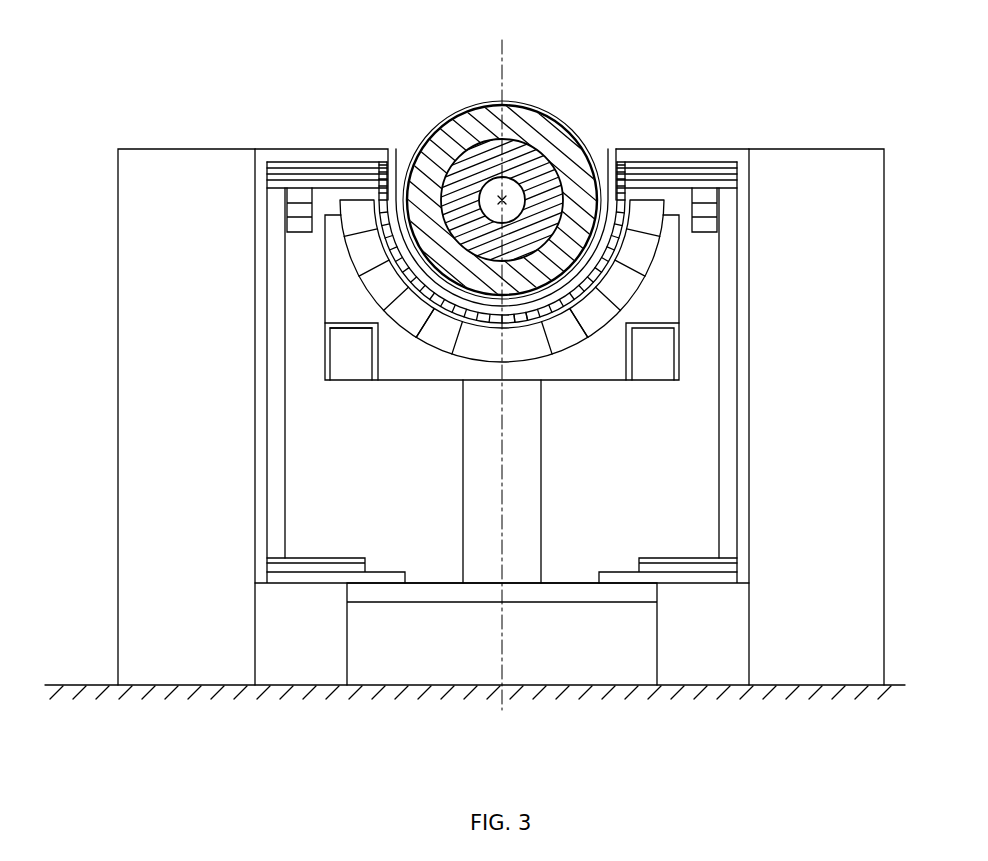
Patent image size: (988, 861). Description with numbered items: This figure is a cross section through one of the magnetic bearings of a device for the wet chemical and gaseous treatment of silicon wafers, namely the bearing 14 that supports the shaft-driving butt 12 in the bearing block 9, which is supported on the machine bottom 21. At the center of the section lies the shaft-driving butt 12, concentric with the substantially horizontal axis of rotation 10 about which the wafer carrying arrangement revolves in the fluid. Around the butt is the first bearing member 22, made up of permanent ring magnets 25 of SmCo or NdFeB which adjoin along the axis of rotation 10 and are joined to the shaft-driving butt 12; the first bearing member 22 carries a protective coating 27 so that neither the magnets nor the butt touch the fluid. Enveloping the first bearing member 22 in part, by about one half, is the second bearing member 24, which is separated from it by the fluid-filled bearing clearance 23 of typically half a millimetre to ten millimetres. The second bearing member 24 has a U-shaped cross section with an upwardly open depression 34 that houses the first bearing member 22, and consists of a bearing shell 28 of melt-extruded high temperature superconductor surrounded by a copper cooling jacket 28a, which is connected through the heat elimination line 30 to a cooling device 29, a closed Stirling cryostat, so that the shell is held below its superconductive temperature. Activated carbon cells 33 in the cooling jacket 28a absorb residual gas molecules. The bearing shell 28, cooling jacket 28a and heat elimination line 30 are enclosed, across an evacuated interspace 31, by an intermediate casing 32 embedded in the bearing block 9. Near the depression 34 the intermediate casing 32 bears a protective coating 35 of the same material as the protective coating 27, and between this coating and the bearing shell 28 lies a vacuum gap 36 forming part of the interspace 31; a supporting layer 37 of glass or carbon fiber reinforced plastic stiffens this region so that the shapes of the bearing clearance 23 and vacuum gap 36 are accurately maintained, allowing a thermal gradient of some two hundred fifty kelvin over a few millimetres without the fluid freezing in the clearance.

The bearing block 9 is at (184, 565).
The axis of rotation 10 is at (504, 198).
The shaft-driving butt 12 is at (542, 184).
The bearing 14 is at (242, 112).
The machine bottom 21 is at (77, 683).
The first bearing member 22 is at (502, 201).
The bearing clearance 23 is at (397, 200).
The second bearing member 24 is at (693, 146).
The permanent ring magnet 25 is at (447, 147).
The protective coating 27 is at (522, 101).
The bearing shell 28 is at (553, 334).
The cooling jacket 28a is at (592, 360).
The cooling device 29 is at (432, 627).
The heat elimination line 30 is at (478, 490).
The interspace 31 is at (316, 290).
The intermediate casing 32 is at (258, 415).
The activated carbon cell 33 is at (346, 361).
The depression 34 is at (458, 323).
The protective coating 35 is at (432, 313).
The vacuum gap 36 is at (497, 325).
The supporting layer 37 is at (521, 322).